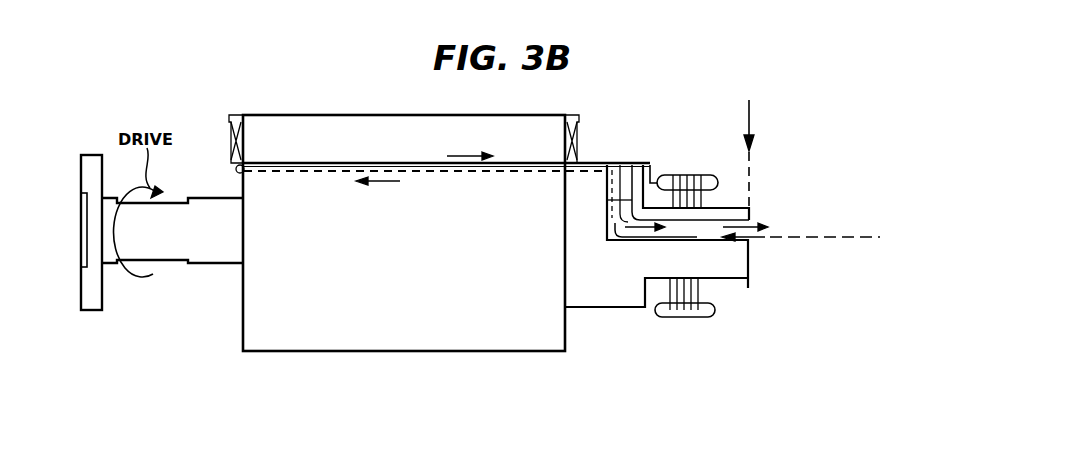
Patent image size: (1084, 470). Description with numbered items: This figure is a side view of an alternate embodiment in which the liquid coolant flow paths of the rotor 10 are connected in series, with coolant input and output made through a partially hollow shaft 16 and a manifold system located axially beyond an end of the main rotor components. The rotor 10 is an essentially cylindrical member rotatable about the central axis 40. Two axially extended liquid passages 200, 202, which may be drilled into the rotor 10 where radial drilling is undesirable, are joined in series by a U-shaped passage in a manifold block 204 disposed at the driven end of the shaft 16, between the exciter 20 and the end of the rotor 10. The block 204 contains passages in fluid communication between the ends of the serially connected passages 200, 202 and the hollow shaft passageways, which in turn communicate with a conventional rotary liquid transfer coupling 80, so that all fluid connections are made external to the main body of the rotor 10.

The rotor 10 is at (545, 124).
The shaft 16 is at (174, 266).
The exciter 20 is at (695, 316).
The central axis 40 is at (780, 243).
The rotary liquid transfer coupling 80 is at (751, 122).
The axially extended liquid passage 200 is at (414, 174).
The axially extended liquid passage 202 is at (372, 162).
The manifold block 204 is at (650, 160).